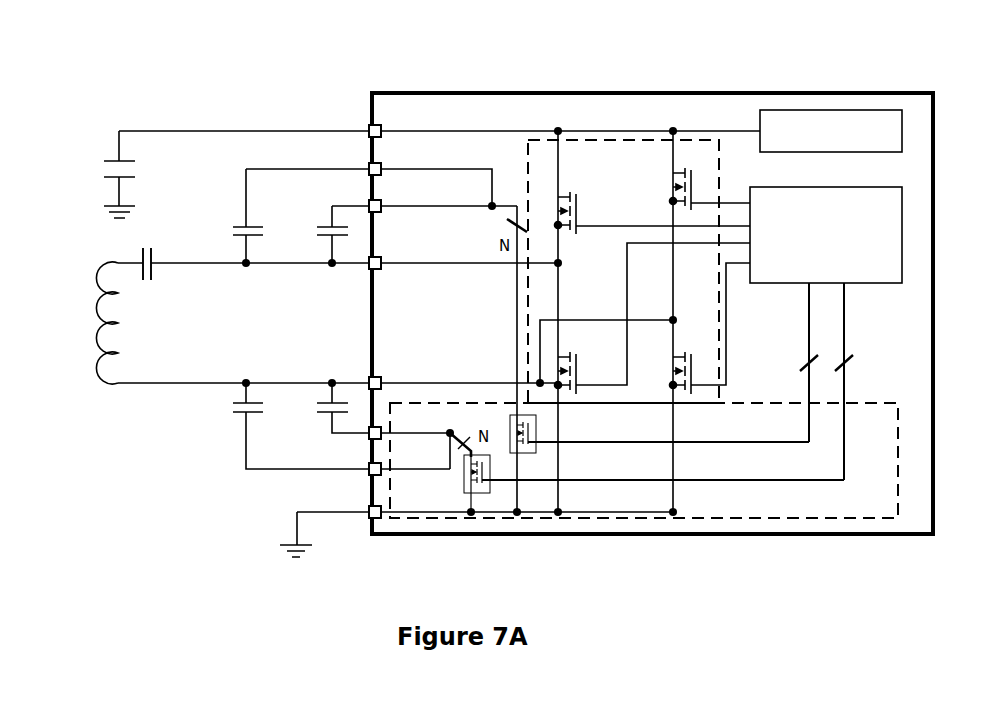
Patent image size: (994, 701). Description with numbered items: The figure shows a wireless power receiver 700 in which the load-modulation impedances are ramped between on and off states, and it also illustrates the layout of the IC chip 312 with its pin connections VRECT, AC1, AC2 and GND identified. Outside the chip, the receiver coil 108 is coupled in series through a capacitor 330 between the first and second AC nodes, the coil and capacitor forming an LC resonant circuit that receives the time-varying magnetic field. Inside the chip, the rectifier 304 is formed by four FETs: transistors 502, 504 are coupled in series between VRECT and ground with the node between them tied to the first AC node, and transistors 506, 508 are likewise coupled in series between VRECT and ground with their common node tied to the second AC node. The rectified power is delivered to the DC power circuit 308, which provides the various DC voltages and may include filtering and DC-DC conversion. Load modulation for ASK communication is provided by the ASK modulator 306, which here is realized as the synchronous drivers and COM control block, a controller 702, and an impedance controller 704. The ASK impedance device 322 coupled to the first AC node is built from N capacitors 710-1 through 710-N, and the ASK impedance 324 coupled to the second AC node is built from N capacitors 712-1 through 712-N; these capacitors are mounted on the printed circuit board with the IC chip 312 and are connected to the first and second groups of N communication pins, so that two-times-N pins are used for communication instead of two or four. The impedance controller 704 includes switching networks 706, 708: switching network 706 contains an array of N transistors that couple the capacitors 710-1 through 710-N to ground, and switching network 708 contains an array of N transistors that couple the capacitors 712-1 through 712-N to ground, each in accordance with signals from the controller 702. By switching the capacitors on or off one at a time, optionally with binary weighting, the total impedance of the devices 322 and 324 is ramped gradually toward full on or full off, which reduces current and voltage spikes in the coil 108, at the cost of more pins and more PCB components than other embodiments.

The receiver 700 is at (162, 102).
The DC power circuit 308 is at (810, 120).
The capacitor 330 is at (140, 245).
The capacitor 710-N is at (233, 234).
The capacitor 710-1 is at (320, 222).
The ASK impedance device 322 is at (292, 241).
The capacitor 712-1 is at (310, 398).
The capacitor 712-N is at (233, 404).
The ASK impedance 324 is at (296, 416).
The receiver coil 108 is at (100, 355).
The IC chip 312 is at (613, 313).
The transistor 502 is at (580, 208).
The transistor 504 is at (584, 368).
The transistor 506 is at (698, 195).
The transistor 508 is at (673, 377).
The rectifier 304 is at (623, 271).
The ASK modulator 306 is at (820, 333).
The controller 702 is at (783, 265).
The impedance controller 704 is at (644, 474).
The switching network 706 is at (513, 415).
The switching network 708 is at (488, 490).